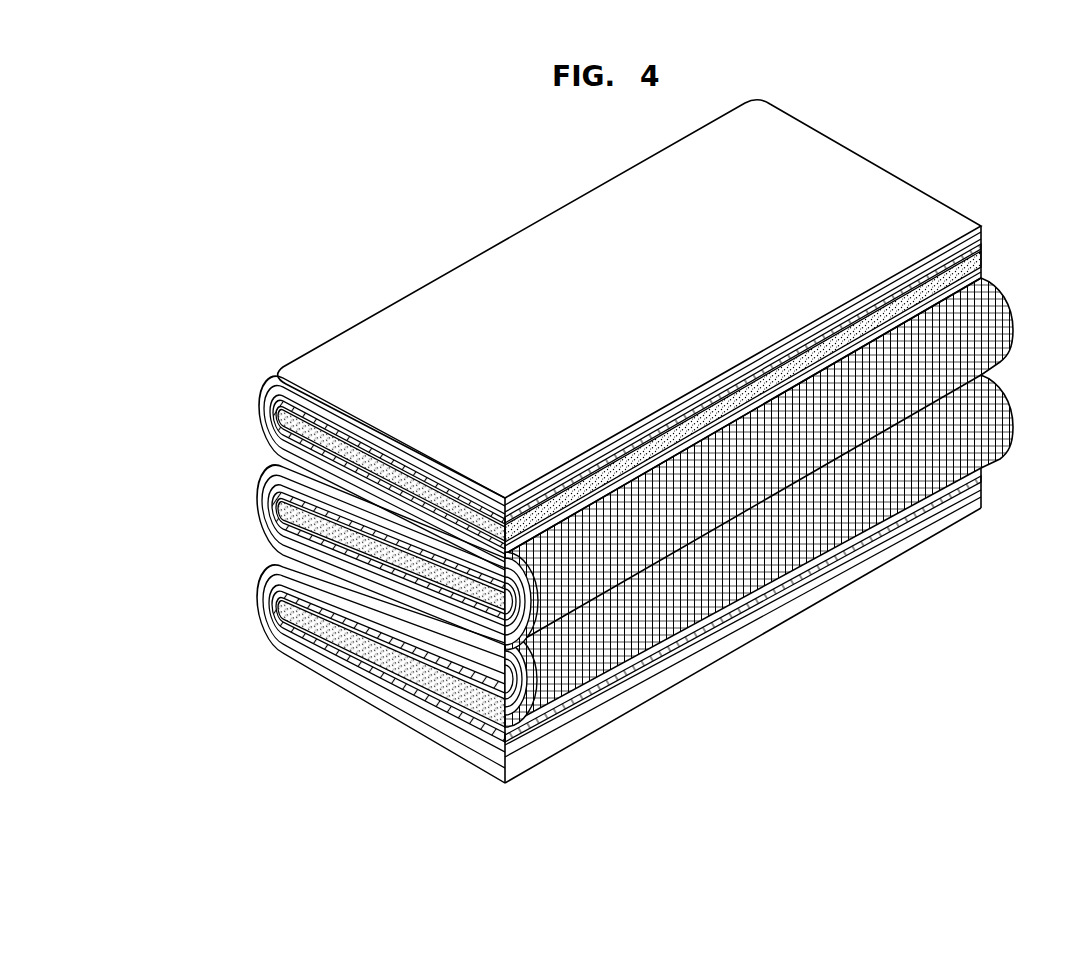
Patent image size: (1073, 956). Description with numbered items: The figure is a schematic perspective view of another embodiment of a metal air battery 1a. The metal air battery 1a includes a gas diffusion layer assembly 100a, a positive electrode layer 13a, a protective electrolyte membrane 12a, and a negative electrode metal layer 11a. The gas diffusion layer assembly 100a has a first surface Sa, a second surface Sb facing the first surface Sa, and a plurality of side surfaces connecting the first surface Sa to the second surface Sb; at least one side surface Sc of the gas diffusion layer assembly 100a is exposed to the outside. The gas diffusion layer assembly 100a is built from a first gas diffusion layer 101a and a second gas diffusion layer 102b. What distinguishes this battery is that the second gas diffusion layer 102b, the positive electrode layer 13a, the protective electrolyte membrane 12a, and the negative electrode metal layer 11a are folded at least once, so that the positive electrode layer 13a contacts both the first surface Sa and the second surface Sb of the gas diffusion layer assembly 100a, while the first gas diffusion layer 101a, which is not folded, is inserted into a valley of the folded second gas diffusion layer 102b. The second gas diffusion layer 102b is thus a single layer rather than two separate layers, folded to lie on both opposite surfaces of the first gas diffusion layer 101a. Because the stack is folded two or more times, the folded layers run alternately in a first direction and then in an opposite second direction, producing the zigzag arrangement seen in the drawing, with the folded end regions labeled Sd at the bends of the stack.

The metal air battery 1a is at (403, 188).
The negative electrode metal layer 11a is at (279, 386).
The protective electrolyte membrane 12a is at (279, 410).
The positive electrode layer 13a is at (283, 428).
The first surface Sa is at (342, 408).
The second surface Sb is at (415, 445).
The side surface Sc is at (745, 415).
The folded end portion Sd is at (272, 458).
The first gas diffusion layer 101a is at (435, 697).
The second gas diffusion layer 102b is at (490, 728).
The gas diffusion layer assembly 100a is at (381, 605).